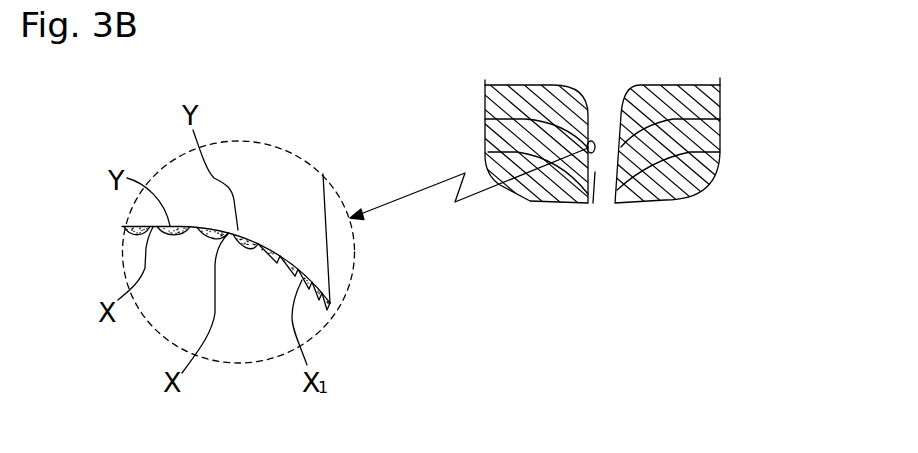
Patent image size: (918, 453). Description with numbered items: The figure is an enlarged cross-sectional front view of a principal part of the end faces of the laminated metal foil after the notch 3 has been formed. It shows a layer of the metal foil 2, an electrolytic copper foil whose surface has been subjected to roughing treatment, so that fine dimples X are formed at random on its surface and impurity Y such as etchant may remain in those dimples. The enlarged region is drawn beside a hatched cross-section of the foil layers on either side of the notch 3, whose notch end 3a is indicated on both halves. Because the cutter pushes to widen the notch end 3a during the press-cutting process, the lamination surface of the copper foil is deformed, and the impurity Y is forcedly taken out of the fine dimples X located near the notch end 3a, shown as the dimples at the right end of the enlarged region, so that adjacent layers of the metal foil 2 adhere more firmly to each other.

The metal foil 2 is at (306, 209).
The notch 3 is at (340, 252).
The notch end 3a is at (326, 306).